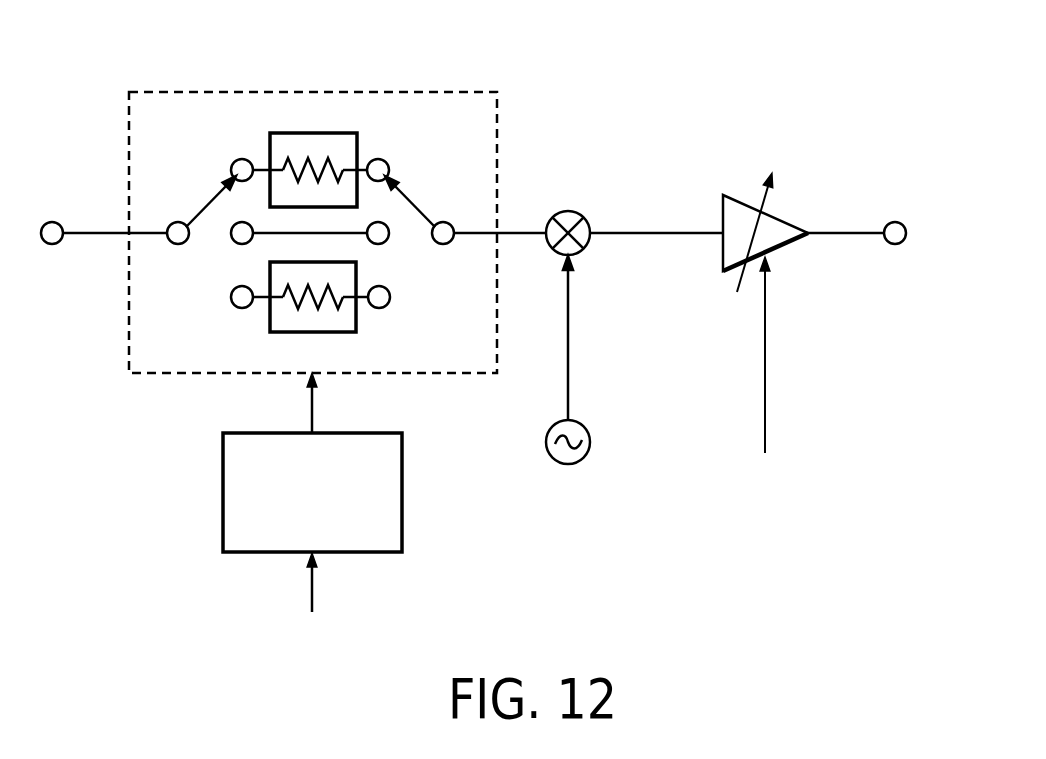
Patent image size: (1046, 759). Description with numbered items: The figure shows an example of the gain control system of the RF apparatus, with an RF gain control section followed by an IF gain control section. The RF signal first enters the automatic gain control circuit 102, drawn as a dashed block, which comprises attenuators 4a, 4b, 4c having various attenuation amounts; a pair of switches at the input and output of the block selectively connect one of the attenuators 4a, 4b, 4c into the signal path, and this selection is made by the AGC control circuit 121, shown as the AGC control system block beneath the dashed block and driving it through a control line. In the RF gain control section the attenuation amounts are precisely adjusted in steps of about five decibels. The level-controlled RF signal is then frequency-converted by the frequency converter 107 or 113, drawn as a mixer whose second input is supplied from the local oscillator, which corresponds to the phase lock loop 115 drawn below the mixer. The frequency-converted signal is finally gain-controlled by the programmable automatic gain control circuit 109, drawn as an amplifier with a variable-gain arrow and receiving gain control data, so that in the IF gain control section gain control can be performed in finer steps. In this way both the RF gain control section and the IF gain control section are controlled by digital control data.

The automatic gain control circuit 102 is at (322, 90).
The attenuator 4a is at (357, 133).
The attenuator 4b is at (350, 237).
The attenuator 4c is at (356, 332).
The frequency converter 107 is at (570, 211).
The frequency converter 113 is at (591, 176).
The phase lock loop 115 is at (568, 465).
The programmable automatic gain control circuit 109 is at (790, 250).
The AGC control circuit 121 is at (372, 433).